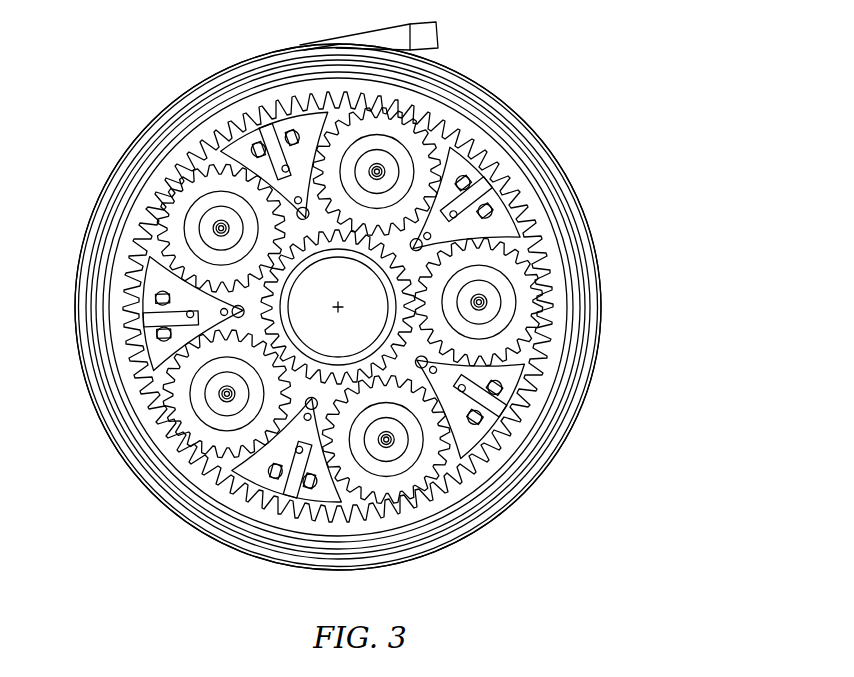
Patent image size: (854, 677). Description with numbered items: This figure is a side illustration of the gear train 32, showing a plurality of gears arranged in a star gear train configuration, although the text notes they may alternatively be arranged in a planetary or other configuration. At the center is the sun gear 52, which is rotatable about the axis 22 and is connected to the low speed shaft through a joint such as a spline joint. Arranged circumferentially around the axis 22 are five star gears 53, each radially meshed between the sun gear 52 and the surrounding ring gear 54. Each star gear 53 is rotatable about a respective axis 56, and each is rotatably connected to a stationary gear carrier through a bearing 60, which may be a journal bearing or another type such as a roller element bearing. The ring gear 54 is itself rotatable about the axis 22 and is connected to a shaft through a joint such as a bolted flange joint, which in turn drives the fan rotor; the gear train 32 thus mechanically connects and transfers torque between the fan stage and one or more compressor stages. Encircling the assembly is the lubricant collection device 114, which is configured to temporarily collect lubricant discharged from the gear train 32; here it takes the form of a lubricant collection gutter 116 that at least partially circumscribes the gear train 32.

The axis 22 is at (344, 306).
The gear train 32 is at (136, 185).
The sun gear 52 is at (302, 448).
The star gears 53 is at (185, 196).
The ring gear 54 is at (527, 205).
The axis 56 is at (212, 226).
The bearing 60 is at (203, 248).
The lubricant collection device 114 is at (275, 52).
The lubricant collection gutter 116 is at (338, 292).